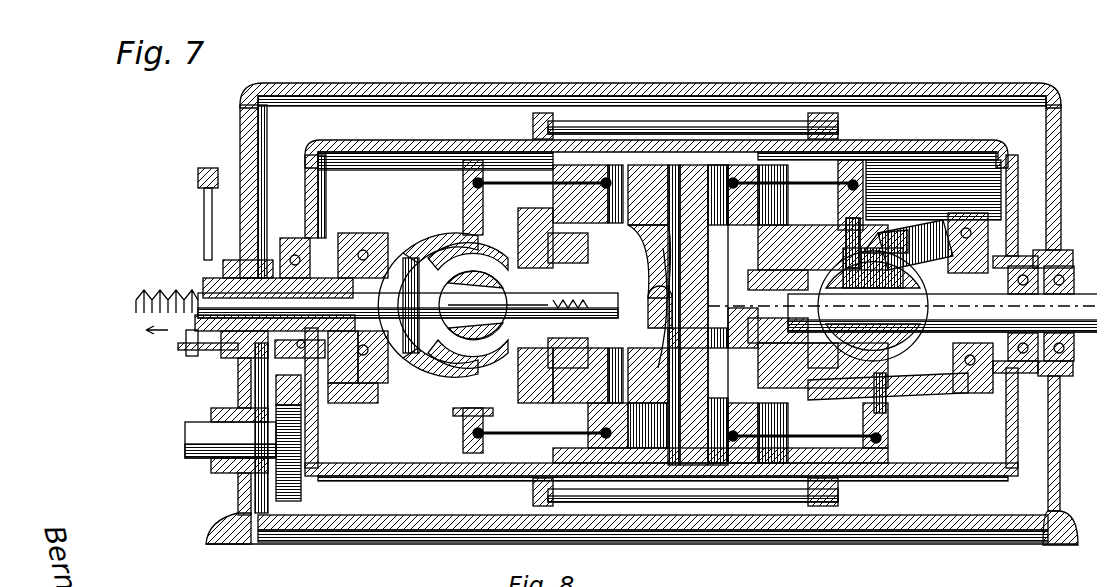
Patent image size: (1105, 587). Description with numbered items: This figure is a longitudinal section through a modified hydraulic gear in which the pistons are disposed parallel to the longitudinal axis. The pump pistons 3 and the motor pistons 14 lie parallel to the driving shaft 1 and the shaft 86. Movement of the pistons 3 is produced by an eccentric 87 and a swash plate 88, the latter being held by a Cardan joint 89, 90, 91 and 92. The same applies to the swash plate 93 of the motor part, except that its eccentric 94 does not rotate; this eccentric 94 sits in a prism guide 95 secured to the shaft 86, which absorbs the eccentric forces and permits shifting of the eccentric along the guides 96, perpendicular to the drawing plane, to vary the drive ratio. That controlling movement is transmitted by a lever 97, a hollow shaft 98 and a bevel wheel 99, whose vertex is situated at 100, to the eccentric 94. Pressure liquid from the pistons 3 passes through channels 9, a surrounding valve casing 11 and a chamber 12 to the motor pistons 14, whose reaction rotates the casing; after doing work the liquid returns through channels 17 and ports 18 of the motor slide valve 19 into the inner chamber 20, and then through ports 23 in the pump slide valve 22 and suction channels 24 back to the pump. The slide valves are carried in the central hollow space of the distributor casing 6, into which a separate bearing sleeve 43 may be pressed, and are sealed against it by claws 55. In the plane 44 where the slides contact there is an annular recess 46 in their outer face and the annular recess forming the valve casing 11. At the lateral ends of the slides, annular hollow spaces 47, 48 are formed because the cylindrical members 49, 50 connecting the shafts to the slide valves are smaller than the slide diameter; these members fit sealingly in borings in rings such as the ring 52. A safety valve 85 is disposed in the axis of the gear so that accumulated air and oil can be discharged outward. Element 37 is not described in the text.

The driving shaft 1 is at (1060, 286).
The pistons 3 is at (712, 160).
The distributor casing 6 is at (645, 157).
The channels 9 is at (688, 160).
The valve casing 11 is at (668, 160).
The chamber 12 is at (640, 160).
The motor pistons 14 is at (585, 157).
The channels 17 is at (648, 428).
The ports 18 is at (658, 308).
The motor slide valve 19 is at (600, 150).
The inner chamber 20 is at (590, 400).
The pump slide valve 22 is at (735, 160).
The ports 23 is at (735, 340).
The suction channels 24 is at (712, 340).
The flange 37 is at (760, 217).
The bearing sleeve 43 is at (545, 392).
The plane 44 is at (688, 340).
The annular recess 46 is at (668, 360).
The annular hollow space 47 is at (845, 380).
The annular hollow space 48 is at (545, 430).
The cylindrical member 49 is at (800, 350).
The cylindrical member 50 is at (535, 360).
The ring 52 is at (550, 225).
The claws 55 is at (770, 300).
The safety valve 85 is at (474, 287).
The shaft 86 is at (180, 345).
The eccentric 87 is at (985, 260).
The swash plate 88 is at (843, 155).
The Cardan joint 89 is at (950, 210).
The Cardan joint 90 is at (895, 240).
The Cardan joint 91 is at (870, 235).
The Cardan joint 92 is at (850, 200).
The swash plate 93 is at (455, 190).
The eccentric 94 is at (330, 372).
The prism guide 95 is at (366, 395).
The guides 96 is at (376, 235).
The lever 97 is at (196, 160).
The hollow shaft 98 is at (215, 262).
The bevel wheel 99 is at (395, 350).
The vertex 100 is at (377, 304).